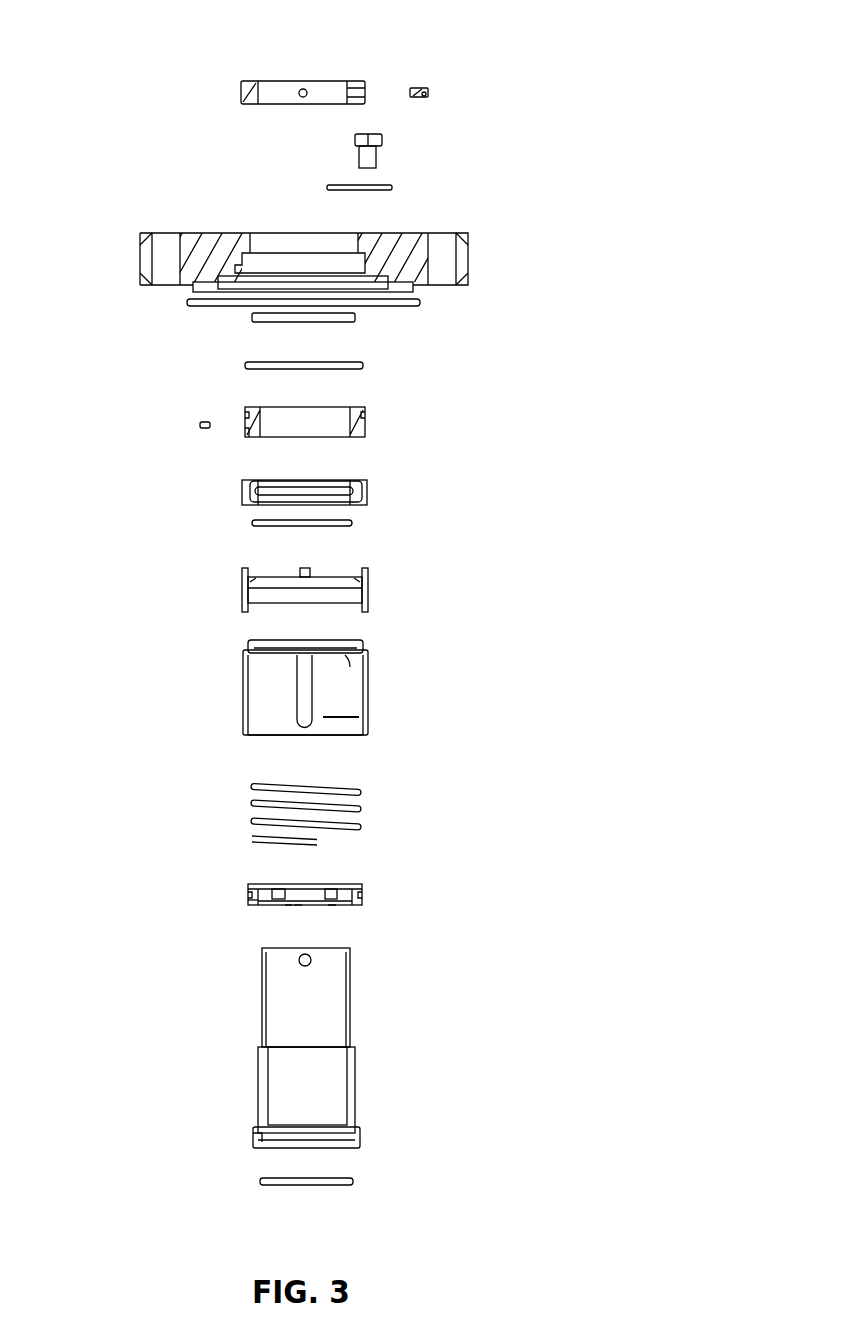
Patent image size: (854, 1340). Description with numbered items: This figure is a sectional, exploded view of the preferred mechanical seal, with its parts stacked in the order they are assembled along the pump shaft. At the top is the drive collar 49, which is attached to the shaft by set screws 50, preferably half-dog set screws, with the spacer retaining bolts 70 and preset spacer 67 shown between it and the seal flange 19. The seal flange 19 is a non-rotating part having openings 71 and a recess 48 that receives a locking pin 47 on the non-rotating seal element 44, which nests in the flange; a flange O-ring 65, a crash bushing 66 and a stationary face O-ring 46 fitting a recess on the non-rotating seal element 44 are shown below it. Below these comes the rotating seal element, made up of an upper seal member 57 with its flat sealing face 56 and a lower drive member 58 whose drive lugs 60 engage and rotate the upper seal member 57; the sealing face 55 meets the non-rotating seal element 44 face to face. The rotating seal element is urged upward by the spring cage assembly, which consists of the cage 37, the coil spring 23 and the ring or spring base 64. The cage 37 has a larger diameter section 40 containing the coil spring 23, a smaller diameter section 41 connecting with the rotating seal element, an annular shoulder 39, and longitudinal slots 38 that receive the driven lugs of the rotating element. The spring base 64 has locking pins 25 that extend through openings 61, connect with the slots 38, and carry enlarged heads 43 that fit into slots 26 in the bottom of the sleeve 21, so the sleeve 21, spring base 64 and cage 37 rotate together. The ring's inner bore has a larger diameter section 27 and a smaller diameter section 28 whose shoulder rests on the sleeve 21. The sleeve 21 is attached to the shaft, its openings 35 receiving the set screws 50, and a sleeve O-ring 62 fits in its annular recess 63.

The seal flange 19 is at (470, 260).
The sleeve 21 is at (356, 1058).
The coil spring 23 is at (362, 810).
The lug/locking pin 25 is at (274, 892).
The slots in sleeve 26 is at (362, 1133).
The larger diameter section 27 is at (252, 900).
The smaller diameter section 28 is at (355, 884).
The opening 35 is at (310, 966).
The cage 37 is at (305, 692).
The longitudinal slot 38 is at (298, 709).
The annular shoulder 39 is at (350, 656).
The larger diameter section 40 is at (287, 736).
The smaller diameter section 41 is at (250, 649).
The head of pin 43 is at (288, 904).
The non-rotating seal element 44 is at (367, 421).
The stationary face O-ring 46 is at (364, 365).
The locking pin 47 is at (200, 424).
The recess 48 is at (246, 268).
The drive collar 49 is at (298, 80).
The set screws 50 is at (418, 86).
The sealing face 55 is at (249, 437).
The sealing face of upper seal member 56 is at (353, 523).
The upper seal member 57 is at (354, 480).
The lower drive member 58 is at (370, 590).
The drive lug 60 is at (303, 566).
The opening in spring base 61 is at (250, 896).
The sleeve O-ring 62 is at (355, 1182).
The annular recess 63 is at (262, 1133).
The spring base 64 is at (298, 906).
The flange O-ring 65 is at (423, 301).
The crash bushing 66 is at (254, 320).
The preset spacer 67 is at (394, 187).
The spacer retaining bolts 70 is at (377, 158).
The openings 71 is at (172, 232).